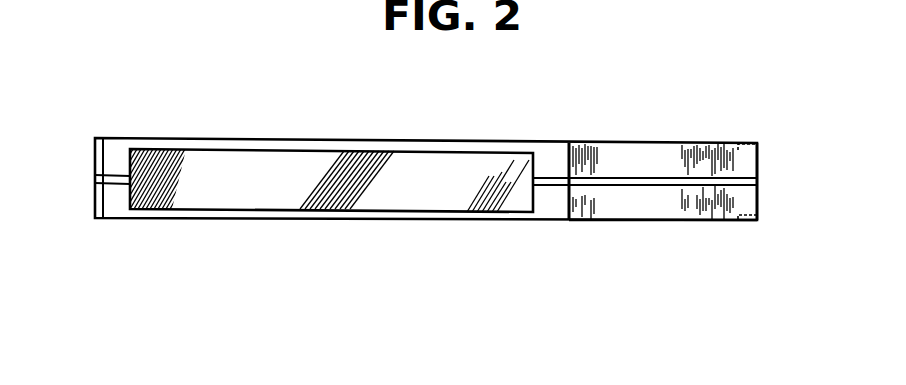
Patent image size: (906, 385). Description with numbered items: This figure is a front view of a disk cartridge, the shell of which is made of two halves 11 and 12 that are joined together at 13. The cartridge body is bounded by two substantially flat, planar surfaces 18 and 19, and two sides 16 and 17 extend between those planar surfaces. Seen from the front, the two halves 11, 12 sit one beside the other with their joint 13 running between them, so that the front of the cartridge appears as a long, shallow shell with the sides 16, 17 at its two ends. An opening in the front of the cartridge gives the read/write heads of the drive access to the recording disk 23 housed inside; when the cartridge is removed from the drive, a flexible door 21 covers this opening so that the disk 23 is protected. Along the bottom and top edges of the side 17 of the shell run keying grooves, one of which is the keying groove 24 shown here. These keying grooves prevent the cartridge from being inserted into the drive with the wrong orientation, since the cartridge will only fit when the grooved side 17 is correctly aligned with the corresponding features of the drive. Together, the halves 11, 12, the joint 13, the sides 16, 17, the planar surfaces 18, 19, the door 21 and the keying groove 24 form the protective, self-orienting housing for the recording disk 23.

The cartridge half 11 is at (686, 208).
The cartridge half 12 is at (702, 142).
The joint 13 is at (95, 185).
The side 16 is at (95, 172).
The side 17 is at (758, 163).
The planar surface 18 is at (620, 222).
The planar surface 19 is at (613, 142).
The flexible door 21 is at (455, 160).
The recording disk 23 is at (755, 142).
The keying groove 24 is at (755, 222).